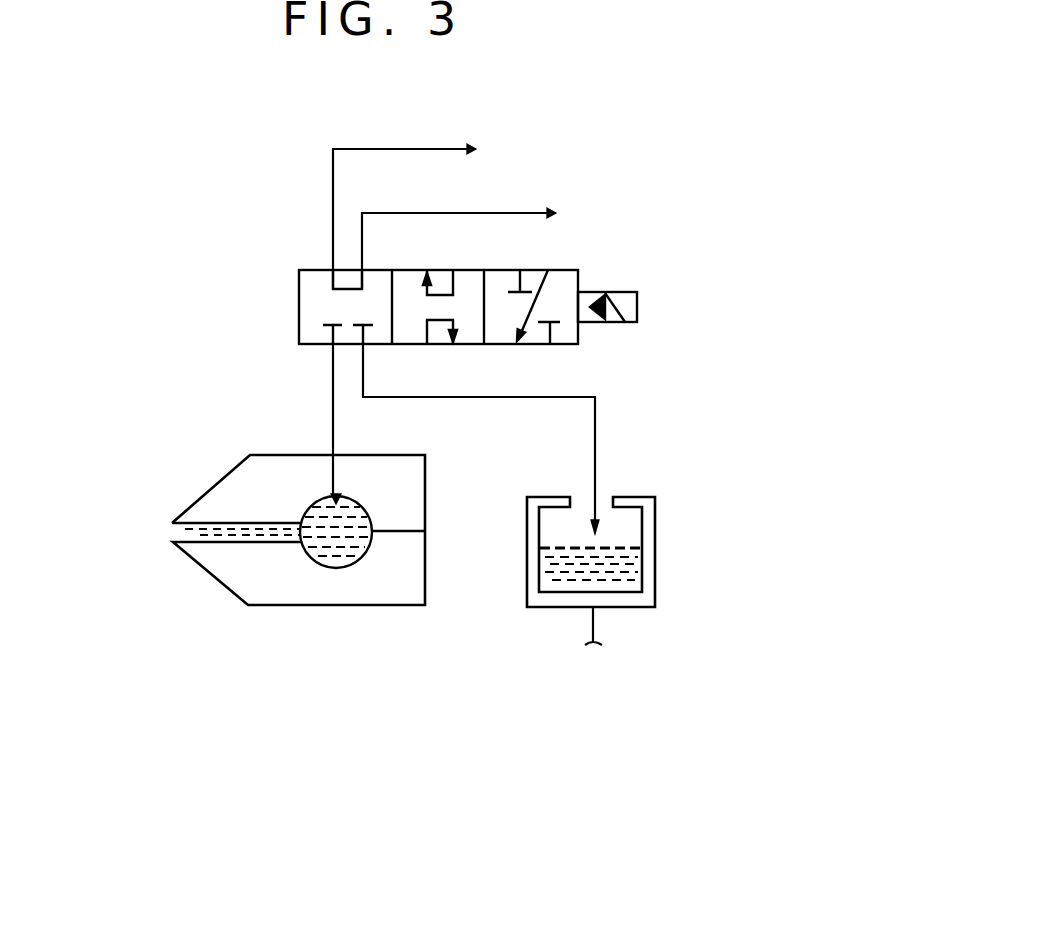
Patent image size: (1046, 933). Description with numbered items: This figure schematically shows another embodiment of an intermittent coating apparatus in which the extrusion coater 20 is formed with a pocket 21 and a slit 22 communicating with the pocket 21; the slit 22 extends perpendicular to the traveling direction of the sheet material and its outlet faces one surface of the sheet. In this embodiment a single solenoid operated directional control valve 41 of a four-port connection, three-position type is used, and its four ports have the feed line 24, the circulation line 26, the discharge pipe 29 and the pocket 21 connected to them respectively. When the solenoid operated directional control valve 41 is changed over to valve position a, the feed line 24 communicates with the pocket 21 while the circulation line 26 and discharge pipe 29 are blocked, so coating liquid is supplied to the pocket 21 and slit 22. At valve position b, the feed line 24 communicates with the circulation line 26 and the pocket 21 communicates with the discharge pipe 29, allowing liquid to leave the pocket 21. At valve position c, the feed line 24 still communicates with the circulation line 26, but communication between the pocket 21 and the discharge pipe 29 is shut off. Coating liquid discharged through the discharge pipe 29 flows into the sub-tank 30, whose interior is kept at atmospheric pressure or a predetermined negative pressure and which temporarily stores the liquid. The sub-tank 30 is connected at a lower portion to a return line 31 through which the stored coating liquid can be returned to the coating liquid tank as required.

The extrusion coater 20 is at (205, 588).
The pocket 21 is at (332, 570).
The slit 22 is at (187, 538).
The feed line 24 is at (477, 213).
The circulation line 26 is at (405, 149).
The discharge pipe 29 is at (537, 398).
The sub-tank 30 is at (655, 552).
The return line 31 is at (600, 622).
The solenoid operated directional control valve 41 is at (286, 294).